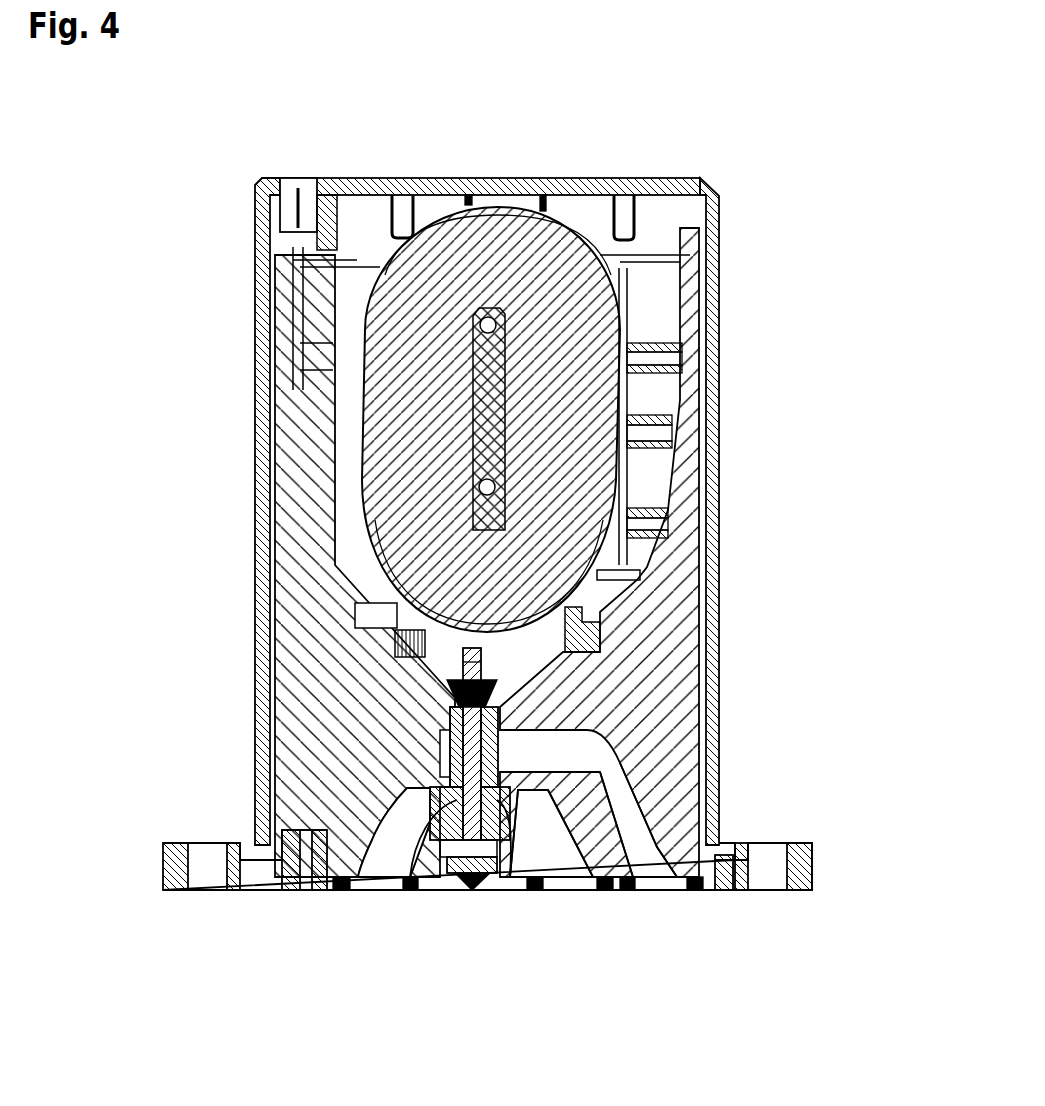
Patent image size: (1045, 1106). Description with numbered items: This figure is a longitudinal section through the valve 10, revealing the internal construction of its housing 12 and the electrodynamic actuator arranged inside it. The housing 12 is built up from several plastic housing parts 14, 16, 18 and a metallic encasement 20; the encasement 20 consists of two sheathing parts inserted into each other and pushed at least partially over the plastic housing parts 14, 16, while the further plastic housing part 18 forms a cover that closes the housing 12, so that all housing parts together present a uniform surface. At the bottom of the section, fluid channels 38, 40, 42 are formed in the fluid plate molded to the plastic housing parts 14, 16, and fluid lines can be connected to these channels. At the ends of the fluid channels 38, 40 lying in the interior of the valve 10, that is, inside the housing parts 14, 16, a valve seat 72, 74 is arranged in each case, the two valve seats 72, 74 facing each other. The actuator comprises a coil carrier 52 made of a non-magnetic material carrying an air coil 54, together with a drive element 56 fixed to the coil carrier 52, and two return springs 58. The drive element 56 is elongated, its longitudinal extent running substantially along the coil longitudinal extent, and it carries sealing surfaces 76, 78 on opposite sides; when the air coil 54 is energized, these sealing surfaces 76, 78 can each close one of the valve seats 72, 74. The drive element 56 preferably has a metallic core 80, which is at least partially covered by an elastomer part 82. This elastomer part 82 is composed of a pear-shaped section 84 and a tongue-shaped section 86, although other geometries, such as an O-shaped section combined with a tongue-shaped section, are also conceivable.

The valve 10 is at (818, 250).
The housing 12 is at (214, 390).
The plastic housing part 14 is at (305, 708).
The plastic housing part 16 is at (665, 703).
The plastic housing part 18 is at (503, 177).
The metallic encasement 20 is at (720, 533).
The fluid channel 38 is at (383, 860).
The fluid channel 40 is at (565, 862).
The fluid channel 42 is at (660, 850).
The coil carrier 52 is at (613, 412).
The air coil 54 is at (583, 380).
The drive element 56 is at (500, 760).
The return spring 58 is at (445, 632).
The valve seat 72 is at (458, 850).
The valve seat 74 is at (508, 865).
The sealing surface 76 is at (412, 870).
The sealing surface 78 is at (538, 865).
The metallic core 80 is at (527, 772).
The elastomer part 82 is at (465, 850).
The pear-shaped section 84 is at (450, 715).
The tongue-shaped section 86 is at (500, 760).